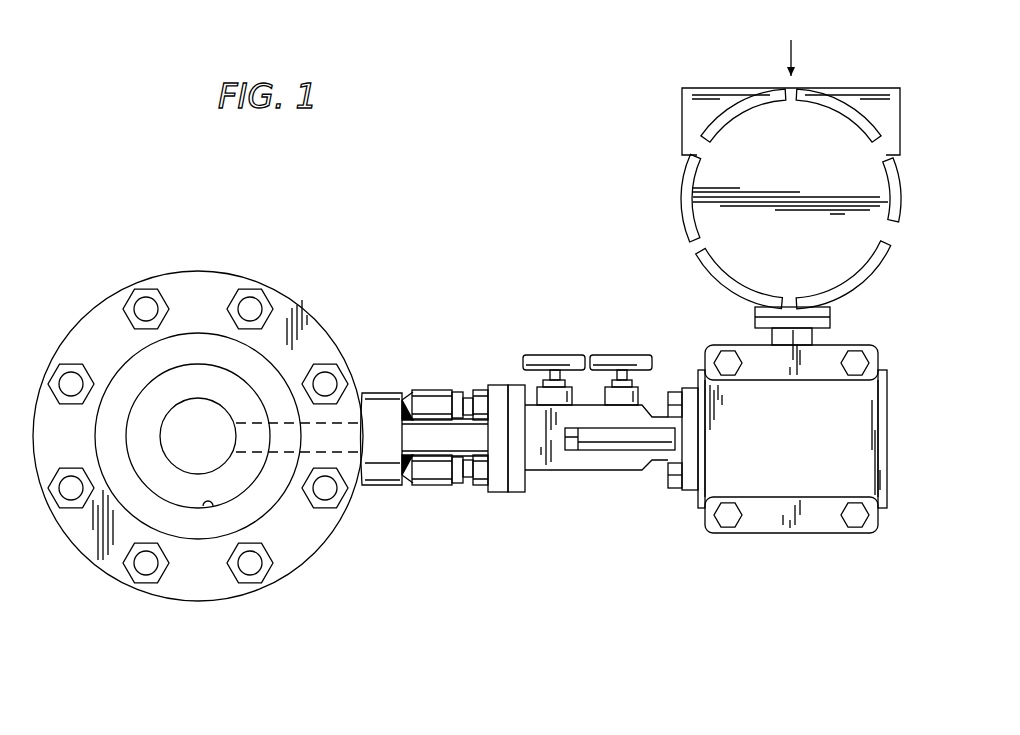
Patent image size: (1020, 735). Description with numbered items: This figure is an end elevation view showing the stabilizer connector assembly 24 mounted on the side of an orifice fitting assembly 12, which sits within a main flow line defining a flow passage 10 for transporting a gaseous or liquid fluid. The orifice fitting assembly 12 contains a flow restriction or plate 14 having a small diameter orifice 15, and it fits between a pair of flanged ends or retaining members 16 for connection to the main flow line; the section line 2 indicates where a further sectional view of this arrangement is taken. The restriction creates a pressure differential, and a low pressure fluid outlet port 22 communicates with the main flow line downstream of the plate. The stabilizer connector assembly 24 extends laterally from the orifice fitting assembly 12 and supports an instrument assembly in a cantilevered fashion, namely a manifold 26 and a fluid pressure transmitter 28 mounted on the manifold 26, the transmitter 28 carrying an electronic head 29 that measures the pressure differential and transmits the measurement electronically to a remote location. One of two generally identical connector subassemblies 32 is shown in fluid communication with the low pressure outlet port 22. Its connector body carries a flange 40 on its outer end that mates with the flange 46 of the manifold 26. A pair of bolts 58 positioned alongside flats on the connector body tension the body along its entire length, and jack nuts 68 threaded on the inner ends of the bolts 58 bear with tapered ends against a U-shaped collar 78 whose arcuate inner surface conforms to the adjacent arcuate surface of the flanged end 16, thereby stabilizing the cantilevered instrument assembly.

The section line of FIG. 2 is at (332, 307).
The flow passage 10 is at (207, 505).
The orifice fitting assembly 12 is at (274, 286).
The flow restriction or plate 14 is at (188, 342).
The orifice 15 is at (207, 448).
The flanged ends or retaining members 16 is at (318, 347).
The low pressure fluid outlet port 22 is at (345, 410).
The stabilizer connector assembly 24 is at (418, 389).
The manifold 26 is at (566, 474).
The fluid pressure transmitter 28 is at (744, 536).
The electronic head 29 is at (676, 218).
The connector subassembly 32 is at (436, 494).
The flange 40 is at (500, 493).
The manifold flange 46 is at (518, 494).
The bolts 58 is at (483, 389).
The jack nuts 68 is at (442, 392).
The U-shaped collar 78 is at (373, 488).